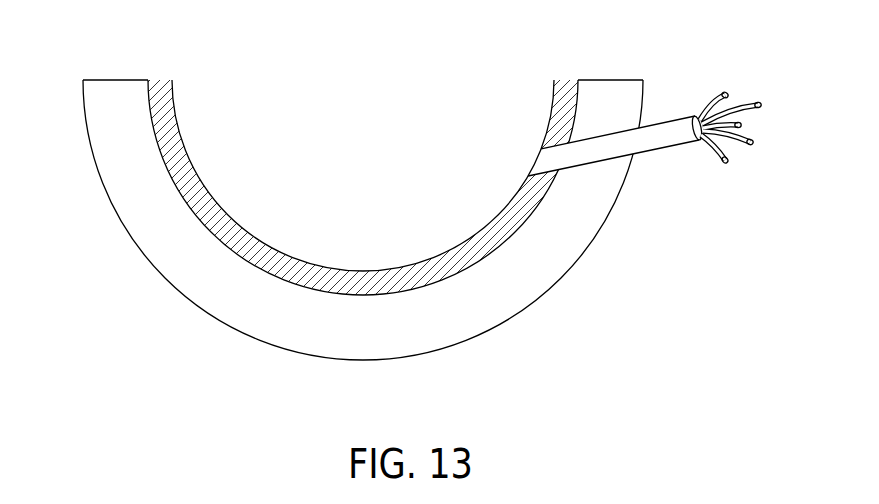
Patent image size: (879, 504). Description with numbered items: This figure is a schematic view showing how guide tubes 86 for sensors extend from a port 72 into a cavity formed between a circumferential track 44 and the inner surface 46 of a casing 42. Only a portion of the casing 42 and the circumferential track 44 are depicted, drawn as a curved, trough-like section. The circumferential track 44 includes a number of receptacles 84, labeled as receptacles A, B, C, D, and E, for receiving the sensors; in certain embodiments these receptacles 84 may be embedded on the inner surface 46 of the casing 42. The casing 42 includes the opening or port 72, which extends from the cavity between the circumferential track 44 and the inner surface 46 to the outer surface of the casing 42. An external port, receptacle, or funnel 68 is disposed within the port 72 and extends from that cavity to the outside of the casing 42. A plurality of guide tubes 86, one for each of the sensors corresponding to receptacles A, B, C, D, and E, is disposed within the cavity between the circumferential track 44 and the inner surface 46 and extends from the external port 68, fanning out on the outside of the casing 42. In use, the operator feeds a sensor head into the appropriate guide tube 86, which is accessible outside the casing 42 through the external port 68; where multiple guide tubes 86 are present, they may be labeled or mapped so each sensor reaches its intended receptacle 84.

The casing 42 is at (360, 322).
The circumferential track 44 is at (528, 180).
The inner surface 46 is at (430, 292).
The external port 68 is at (661, 153).
The port 72 is at (597, 122).
The receptacles 84 is at (417, 80).
The guide tubes 86 is at (726, 175).
The receptacle A is at (177, 112).
The receptacle B is at (213, 193).
The receptacle C is at (287, 252).
The receptacle D is at (389, 270).
The receptacle E is at (490, 220).